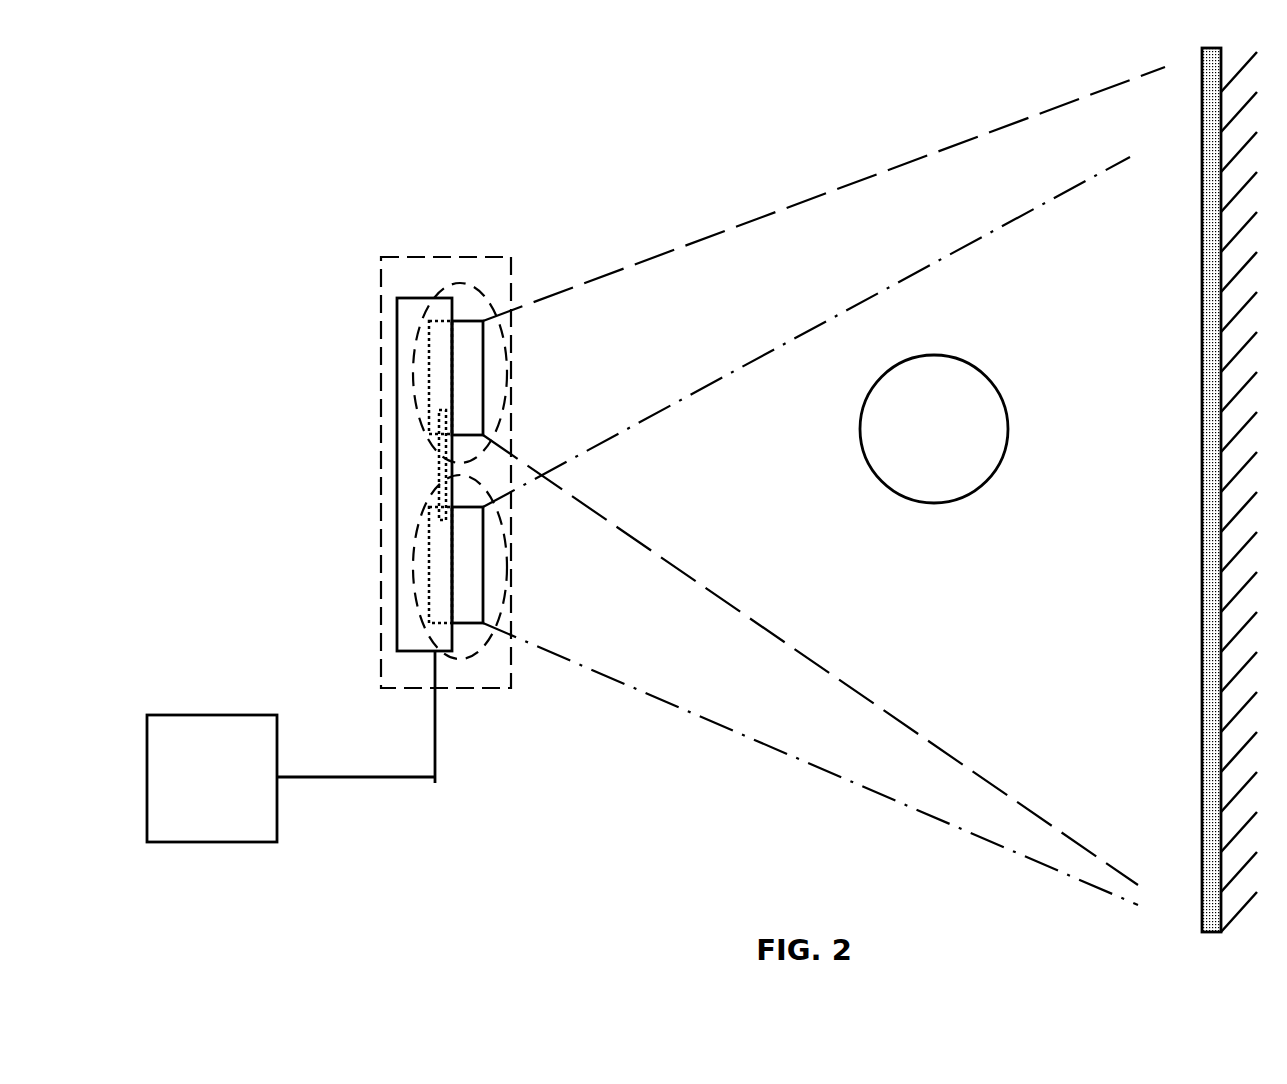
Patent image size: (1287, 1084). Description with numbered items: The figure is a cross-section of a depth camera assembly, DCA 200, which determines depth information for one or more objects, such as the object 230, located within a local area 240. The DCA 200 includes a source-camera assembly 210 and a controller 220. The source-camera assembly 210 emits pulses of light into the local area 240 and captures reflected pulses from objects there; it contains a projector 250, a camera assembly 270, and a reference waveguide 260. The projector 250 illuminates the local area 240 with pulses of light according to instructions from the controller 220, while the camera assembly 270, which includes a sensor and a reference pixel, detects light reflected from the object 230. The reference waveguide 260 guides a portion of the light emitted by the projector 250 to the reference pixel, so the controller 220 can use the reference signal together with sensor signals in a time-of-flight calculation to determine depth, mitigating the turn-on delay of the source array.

The DCA 200 is at (189, 63).
The source-camera assembly 210 is at (383, 337).
The controller 220 is at (291, 778).
The object 230 is at (934, 429).
The local area 240 is at (1149, 490).
The projector 250 is at (478, 650).
The reference waveguide 260 is at (442, 473).
The camera assembly 270 is at (478, 292).